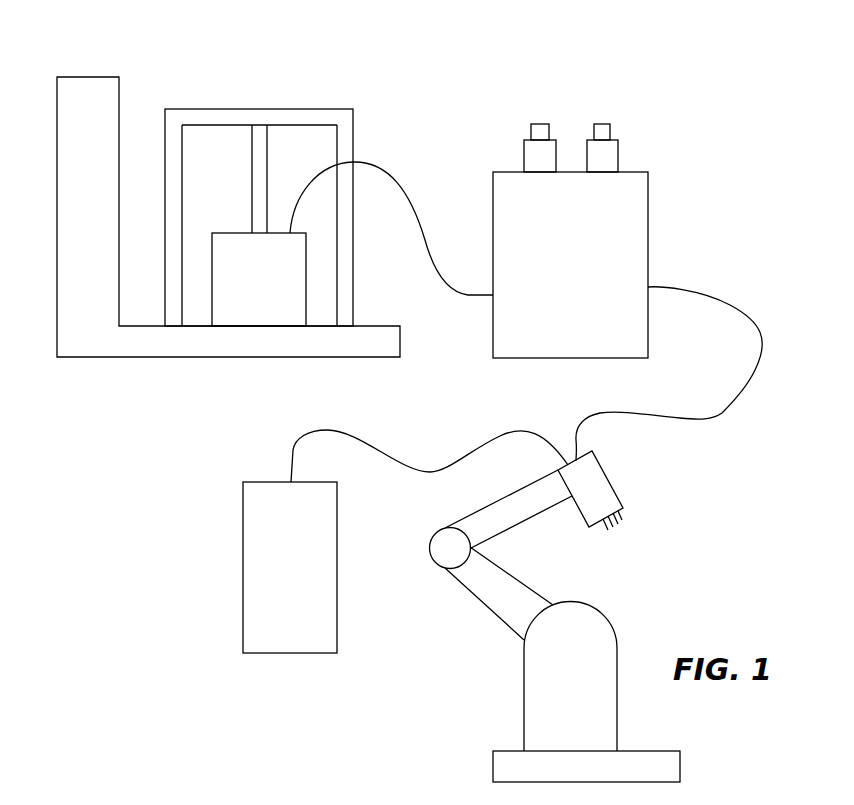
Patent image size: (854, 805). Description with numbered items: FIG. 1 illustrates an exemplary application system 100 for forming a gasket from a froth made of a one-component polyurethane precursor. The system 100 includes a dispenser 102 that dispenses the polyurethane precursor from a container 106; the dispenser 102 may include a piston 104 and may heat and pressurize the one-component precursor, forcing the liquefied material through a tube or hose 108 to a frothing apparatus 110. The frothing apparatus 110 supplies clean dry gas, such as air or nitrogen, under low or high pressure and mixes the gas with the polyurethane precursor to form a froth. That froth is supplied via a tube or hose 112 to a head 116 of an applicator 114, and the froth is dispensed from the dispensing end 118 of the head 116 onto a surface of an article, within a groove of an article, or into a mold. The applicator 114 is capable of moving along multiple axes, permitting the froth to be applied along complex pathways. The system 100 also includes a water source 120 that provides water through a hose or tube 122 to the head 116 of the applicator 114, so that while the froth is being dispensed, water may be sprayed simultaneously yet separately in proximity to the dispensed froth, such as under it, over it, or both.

The application system 100 is at (509, 44).
The dispenser 102 is at (86, 77).
The piston 104 is at (252, 107).
The container 106 is at (252, 287).
The tube or hose 108 is at (405, 182).
The frothing apparatus 110 is at (648, 208).
The tube or hose 112 is at (722, 413).
The applicator 114 is at (524, 703).
The head 116 is at (612, 478).
The dispensing end 118 is at (625, 523).
The water source 120 is at (243, 560).
The hose or tube 122 is at (458, 463).